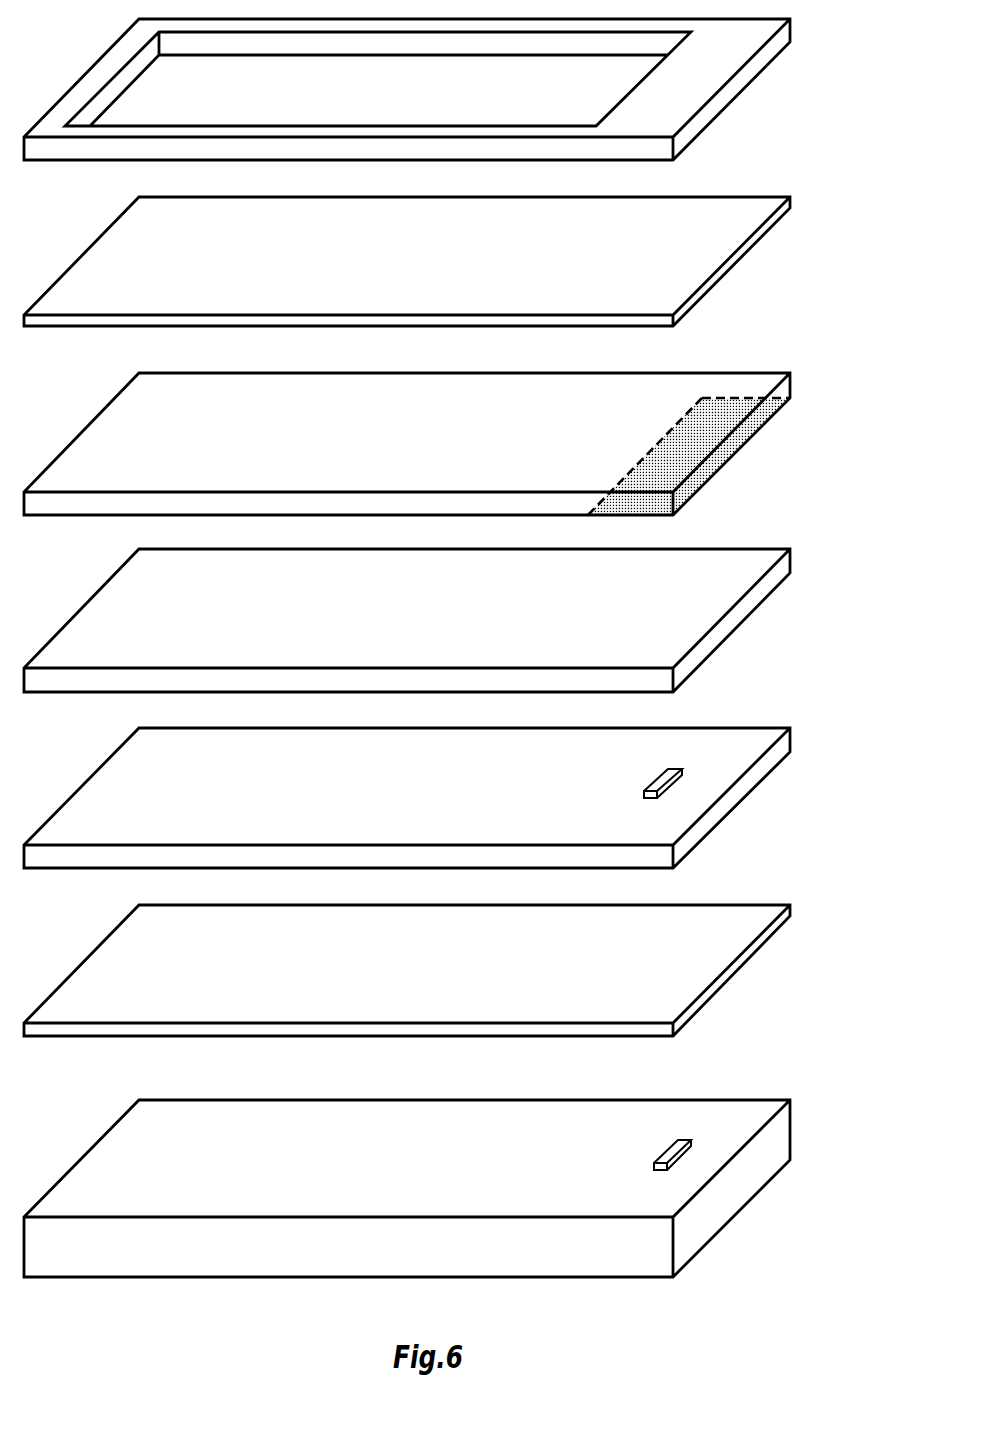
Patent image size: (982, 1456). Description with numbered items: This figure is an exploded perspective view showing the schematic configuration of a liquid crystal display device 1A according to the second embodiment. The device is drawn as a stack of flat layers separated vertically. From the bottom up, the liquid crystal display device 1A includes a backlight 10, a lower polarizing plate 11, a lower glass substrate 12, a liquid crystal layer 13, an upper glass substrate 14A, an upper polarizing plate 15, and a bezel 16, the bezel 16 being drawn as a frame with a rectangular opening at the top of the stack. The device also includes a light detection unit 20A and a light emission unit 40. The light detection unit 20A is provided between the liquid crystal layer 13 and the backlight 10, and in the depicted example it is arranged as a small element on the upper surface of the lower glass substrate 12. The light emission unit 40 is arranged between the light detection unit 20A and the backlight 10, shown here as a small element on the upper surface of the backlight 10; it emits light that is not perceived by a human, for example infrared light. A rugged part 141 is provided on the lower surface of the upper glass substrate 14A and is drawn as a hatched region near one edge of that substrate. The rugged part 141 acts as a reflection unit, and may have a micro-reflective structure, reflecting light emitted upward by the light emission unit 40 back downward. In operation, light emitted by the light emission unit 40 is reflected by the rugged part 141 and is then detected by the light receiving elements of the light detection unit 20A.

The liquid crystal display device 1A is at (828, 1352).
The backlight 10 is at (762, 1158).
The lower polarizing plate 11 is at (762, 938).
The lower glass substrate 12 is at (763, 765).
The liquid crystal layer 13 is at (762, 592).
The upper glass substrate 14A is at (464, 444).
The rugged part 141 is at (742, 449).
The upper polarizing plate 15 is at (763, 233).
The bezel 16 is at (762, 60).
The light detection unit 20A is at (676, 781).
The light emission unit 40 is at (681, 1150).